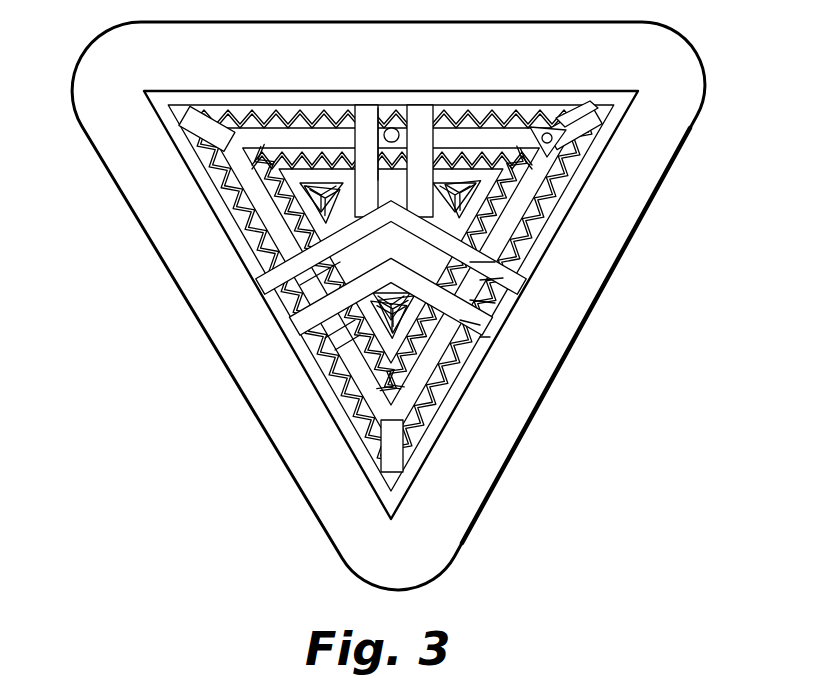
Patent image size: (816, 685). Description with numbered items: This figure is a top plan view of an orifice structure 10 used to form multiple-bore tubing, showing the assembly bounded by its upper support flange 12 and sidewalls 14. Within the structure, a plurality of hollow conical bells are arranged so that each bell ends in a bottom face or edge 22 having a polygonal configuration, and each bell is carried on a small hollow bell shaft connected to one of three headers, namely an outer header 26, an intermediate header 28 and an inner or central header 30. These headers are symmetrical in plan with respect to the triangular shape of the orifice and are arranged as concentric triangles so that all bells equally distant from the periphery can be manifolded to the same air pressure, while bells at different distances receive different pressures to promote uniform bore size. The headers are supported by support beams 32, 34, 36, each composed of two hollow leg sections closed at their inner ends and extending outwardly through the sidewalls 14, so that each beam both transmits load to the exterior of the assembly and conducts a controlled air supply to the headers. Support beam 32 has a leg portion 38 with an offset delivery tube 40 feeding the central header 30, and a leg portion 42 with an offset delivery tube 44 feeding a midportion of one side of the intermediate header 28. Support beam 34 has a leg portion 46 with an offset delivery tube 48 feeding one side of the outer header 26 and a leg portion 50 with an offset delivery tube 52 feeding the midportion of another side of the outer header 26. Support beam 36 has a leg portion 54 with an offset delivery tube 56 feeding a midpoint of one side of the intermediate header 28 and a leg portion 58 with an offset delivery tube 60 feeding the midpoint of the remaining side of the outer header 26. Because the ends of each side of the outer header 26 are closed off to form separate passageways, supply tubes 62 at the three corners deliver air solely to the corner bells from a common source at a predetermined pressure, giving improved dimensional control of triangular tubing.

The orifice structure 10 is at (603, 236).
The upper support flange 12 is at (130, 195).
The sidewalls 14 is at (255, 97).
The bottom face or edge 22 is at (497, 147).
The outer header 26 is at (243, 173).
The intermediate header 28 is at (433, 373).
The inner or central header 30 is at (300, 285).
The support beam 32 is at (372, 113).
The support beam 34 is at (424, 110).
The support beam 36 is at (415, 353).
The leg portion 38 is at (357, 128).
The offset delivery tube 40 is at (503, 278).
The leg portion 42 is at (262, 277).
The offset delivery tube 44 is at (325, 338).
The leg portion 46 is at (413, 123).
The offset delivery tube 48 is at (393, 124).
The leg portion 50 is at (495, 262).
The offset delivery tube 52 is at (495, 303).
The leg portion 54 is at (490, 337).
The offset delivery tube 56 is at (480, 325).
The leg portion 58 is at (335, 350).
The offset delivery tube 60 is at (300, 325).
The supply tubes 62 is at (180, 108).